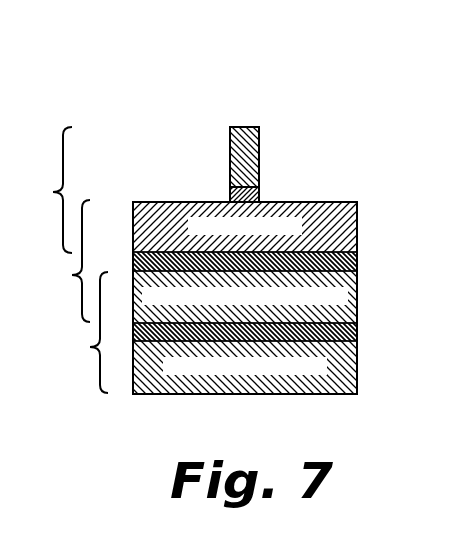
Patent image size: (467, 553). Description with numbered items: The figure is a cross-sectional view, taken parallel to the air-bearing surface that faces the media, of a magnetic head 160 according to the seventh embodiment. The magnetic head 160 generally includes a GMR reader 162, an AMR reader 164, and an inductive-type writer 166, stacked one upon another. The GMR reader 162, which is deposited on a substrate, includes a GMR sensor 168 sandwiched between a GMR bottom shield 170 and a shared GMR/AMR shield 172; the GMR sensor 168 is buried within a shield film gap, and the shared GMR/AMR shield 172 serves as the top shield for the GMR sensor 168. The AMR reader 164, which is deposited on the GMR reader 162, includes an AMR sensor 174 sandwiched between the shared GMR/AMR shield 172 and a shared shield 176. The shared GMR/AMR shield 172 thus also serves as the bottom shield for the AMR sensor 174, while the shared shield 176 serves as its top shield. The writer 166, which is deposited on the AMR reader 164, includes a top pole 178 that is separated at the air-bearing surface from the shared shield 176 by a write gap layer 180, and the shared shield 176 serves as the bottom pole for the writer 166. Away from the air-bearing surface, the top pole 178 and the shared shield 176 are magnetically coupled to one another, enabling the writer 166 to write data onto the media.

The magnetic head 160 is at (356, 84).
The GMR reader 162 is at (80, 332).
The AMR reader 164 is at (64, 261).
The inductive-type writer 166 is at (44, 190).
The GMR sensor 168 is at (270, 335).
The GMR bottom shield 170 is at (357, 368).
The shared GMR/AMR shield 172 is at (357, 289).
The AMR sensor 174 is at (270, 263).
The shared shield 176 is at (357, 222).
The top pole 178 is at (259, 152).
The write gap layer 180 is at (270, 192).